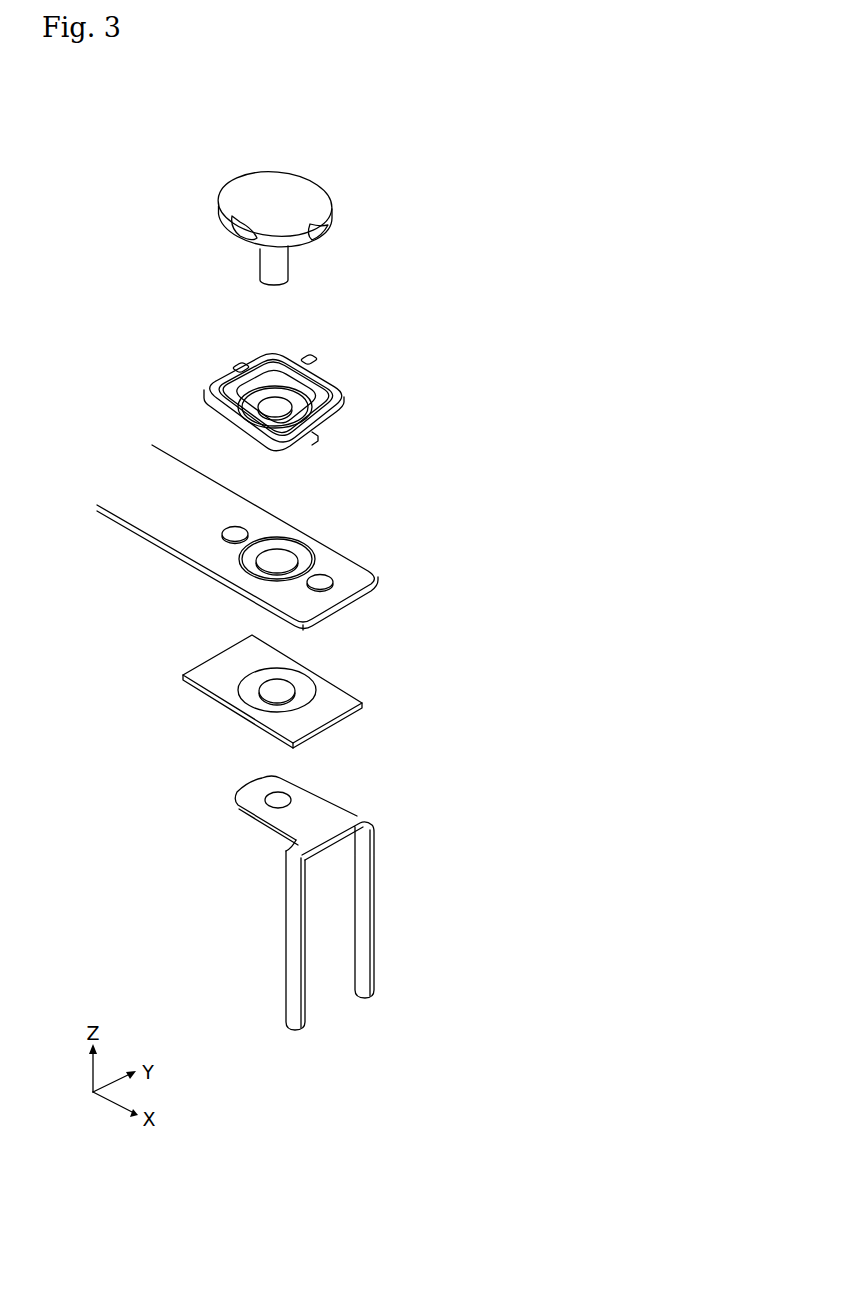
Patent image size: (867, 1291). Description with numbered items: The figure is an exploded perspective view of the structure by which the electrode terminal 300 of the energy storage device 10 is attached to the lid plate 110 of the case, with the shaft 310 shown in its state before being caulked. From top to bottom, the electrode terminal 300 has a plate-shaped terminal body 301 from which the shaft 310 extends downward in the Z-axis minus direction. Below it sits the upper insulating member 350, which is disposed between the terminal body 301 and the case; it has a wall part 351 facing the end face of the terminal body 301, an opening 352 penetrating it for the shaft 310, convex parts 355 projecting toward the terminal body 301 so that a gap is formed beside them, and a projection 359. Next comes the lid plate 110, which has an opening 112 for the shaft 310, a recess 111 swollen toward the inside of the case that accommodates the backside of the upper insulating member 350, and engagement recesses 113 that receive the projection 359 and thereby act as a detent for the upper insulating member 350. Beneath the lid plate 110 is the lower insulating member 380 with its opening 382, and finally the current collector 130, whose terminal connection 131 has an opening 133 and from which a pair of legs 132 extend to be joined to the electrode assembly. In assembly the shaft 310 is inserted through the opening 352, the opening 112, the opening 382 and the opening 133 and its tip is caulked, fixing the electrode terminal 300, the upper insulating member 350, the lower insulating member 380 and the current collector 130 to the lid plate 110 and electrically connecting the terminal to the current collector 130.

The energy storage device 10 is at (452, 152).
The electrode terminal 300 is at (409, 186).
The terminal body 301 is at (316, 205).
The shaft 310 is at (282, 268).
The upper insulating member 350 is at (356, 395).
The wall part 351 is at (207, 385).
The opening 352 is at (272, 402).
The convex part 355 is at (240, 368).
The projection 359 is at (318, 437).
The lid plate 110 is at (349, 577).
The recess 111 is at (300, 555).
The opening 112 is at (277, 565).
The engagement recess 113 is at (234, 531).
The lower insulating member 380 is at (343, 700).
The opening 382 is at (277, 692).
The current collector 130 is at (433, 788).
The terminal connection 131 is at (235, 803).
The legs 132 is at (293, 947).
The opening 133 is at (279, 799).